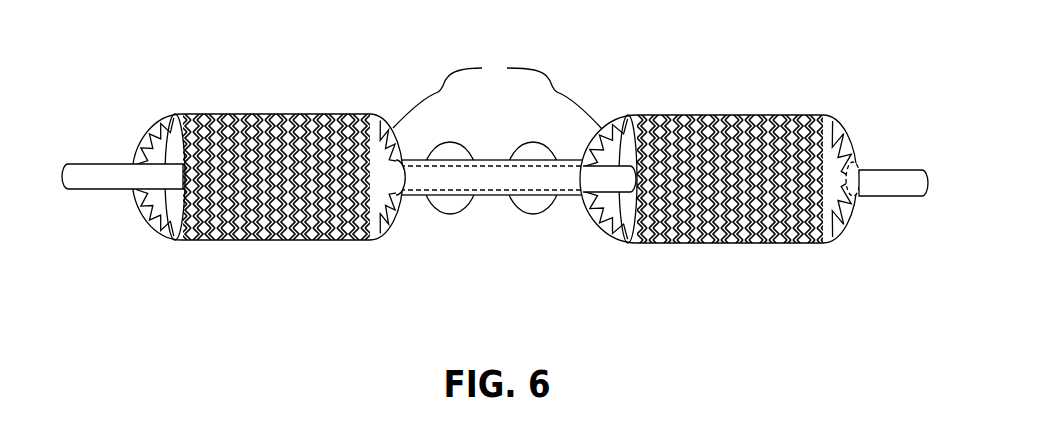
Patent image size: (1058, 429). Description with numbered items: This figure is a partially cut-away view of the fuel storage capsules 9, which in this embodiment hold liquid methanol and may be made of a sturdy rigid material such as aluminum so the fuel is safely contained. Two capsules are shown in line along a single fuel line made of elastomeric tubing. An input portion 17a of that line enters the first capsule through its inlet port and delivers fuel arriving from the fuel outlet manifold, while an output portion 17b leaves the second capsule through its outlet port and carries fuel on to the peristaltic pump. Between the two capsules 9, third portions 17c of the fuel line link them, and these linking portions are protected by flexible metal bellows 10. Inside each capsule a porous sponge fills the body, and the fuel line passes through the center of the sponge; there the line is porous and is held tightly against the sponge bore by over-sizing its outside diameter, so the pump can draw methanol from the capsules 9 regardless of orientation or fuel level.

The fuel storage capsules 9 is at (498, 93).
The flexible metal bellows 10 is at (492, 221).
The input portion 17a is at (105, 190).
The output portion 17b is at (875, 196).
The third portions 17c is at (530, 190).